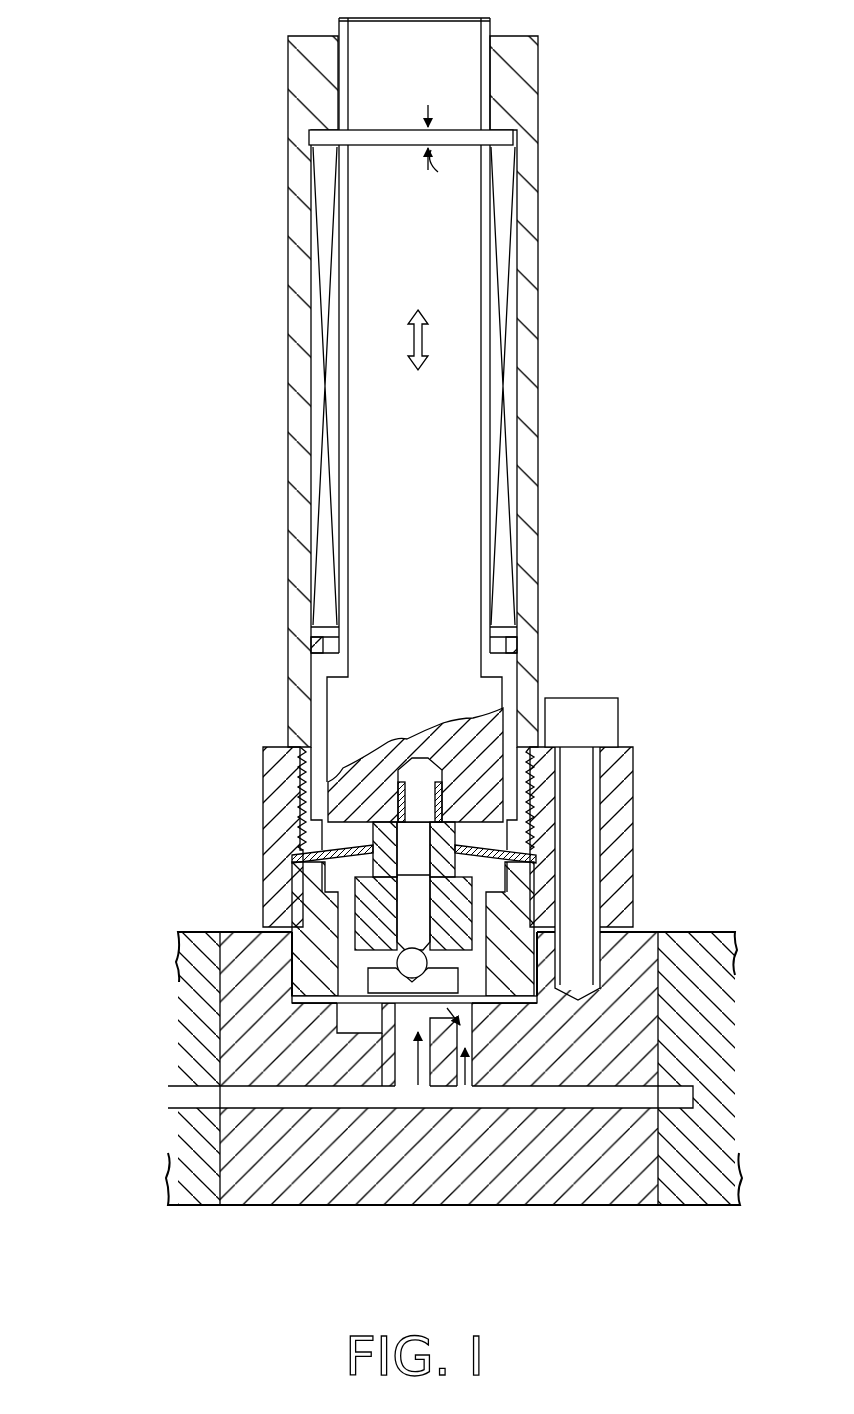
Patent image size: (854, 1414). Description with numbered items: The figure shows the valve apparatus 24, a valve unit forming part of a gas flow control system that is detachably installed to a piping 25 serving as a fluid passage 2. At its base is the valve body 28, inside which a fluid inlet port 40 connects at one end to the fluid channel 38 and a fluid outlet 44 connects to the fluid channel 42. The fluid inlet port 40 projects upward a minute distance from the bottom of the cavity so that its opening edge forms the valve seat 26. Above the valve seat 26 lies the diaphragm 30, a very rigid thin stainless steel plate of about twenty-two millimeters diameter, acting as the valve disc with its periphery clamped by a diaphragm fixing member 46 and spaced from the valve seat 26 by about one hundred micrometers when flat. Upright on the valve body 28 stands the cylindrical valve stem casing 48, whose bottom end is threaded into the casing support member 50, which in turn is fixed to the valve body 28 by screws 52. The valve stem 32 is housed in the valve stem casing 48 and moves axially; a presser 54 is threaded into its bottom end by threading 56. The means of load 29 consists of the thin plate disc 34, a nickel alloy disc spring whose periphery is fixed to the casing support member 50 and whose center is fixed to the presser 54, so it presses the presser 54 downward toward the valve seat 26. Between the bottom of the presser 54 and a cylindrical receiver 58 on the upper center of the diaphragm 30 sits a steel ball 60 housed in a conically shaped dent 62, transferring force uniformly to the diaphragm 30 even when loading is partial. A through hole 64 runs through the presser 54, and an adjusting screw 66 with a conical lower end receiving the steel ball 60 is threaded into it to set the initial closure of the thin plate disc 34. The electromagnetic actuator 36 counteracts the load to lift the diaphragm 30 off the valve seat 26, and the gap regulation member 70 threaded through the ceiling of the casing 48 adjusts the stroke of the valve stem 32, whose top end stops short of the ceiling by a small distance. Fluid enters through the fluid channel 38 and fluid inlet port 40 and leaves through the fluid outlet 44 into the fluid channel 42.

The fluid passage 2 is at (230, 1205).
The valve apparatus 24 is at (70, 1211).
The piping 25 is at (205, 942).
The valve seat 26 is at (396, 1090).
The valve body 28 is at (297, 1072).
The means of load 29 is at (360, 834).
The diaphragm 30 is at (500, 1035).
The valve stem 32 is at (450, 447).
The thin plate disc 34 is at (495, 832).
The electromagnetic actuator 36 is at (508, 276).
The fluid channel 38 is at (312, 1098).
The fluid inlet port 40 is at (422, 1108).
The fluid channel 42 is at (615, 1100).
The fluid outlet 44 is at (468, 1095).
The diaphragm fixing member 46 is at (300, 975).
The valve stem casing 48 is at (528, 188).
The casing support member 50 is at (625, 785).
The screws 52 is at (600, 712).
The presser 54 is at (473, 887).
The threading 56 is at (380, 800).
The receiver 58 is at (458, 990).
The steel ball 60 is at (465, 1025).
The conically shaped dent 62 is at (386, 988).
The through hole 64 is at (355, 908).
The adjusting screw 66 is at (413, 932).
The gap regulation member 70 is at (460, 28).